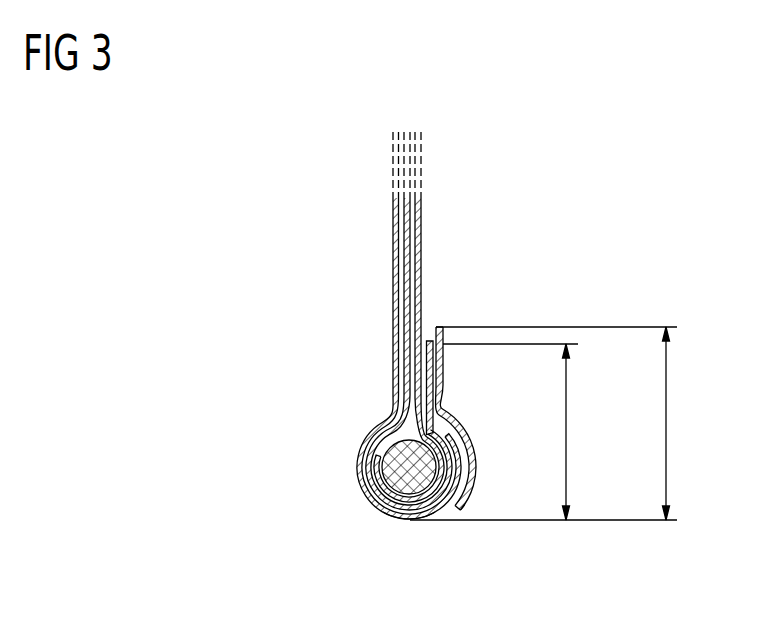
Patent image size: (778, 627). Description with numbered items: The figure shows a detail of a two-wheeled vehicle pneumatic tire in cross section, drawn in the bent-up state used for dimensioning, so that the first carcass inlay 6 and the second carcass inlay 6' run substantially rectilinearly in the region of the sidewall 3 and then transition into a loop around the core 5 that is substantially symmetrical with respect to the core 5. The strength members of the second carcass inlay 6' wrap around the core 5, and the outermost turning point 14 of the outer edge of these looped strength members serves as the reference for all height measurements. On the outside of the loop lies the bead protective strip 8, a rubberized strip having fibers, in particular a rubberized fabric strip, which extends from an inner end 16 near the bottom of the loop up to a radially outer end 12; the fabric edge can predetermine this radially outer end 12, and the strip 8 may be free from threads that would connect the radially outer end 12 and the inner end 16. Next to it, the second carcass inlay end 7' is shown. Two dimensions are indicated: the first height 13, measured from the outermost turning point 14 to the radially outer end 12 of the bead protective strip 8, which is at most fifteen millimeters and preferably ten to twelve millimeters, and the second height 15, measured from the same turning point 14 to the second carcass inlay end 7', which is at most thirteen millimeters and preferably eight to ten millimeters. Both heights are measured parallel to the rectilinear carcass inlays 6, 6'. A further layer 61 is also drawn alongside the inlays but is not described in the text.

The sidewall 3 is at (285, 173).
The core 5 is at (392, 463).
The first carcass inlay 6 is at (386, 354).
The second carcass inlay 6' is at (390, 358).
The layer 61 is at (421, 227).
The second carcass inlay end 7' is at (460, 335).
The bead protective strip 8 is at (473, 438).
The radially outer end of the bead protective strip 12 is at (440, 327).
The first height 13 is at (666, 423).
The outermost turning point 14 is at (410, 521).
The second height 15 is at (566, 423).
The inner end 16 is at (458, 509).